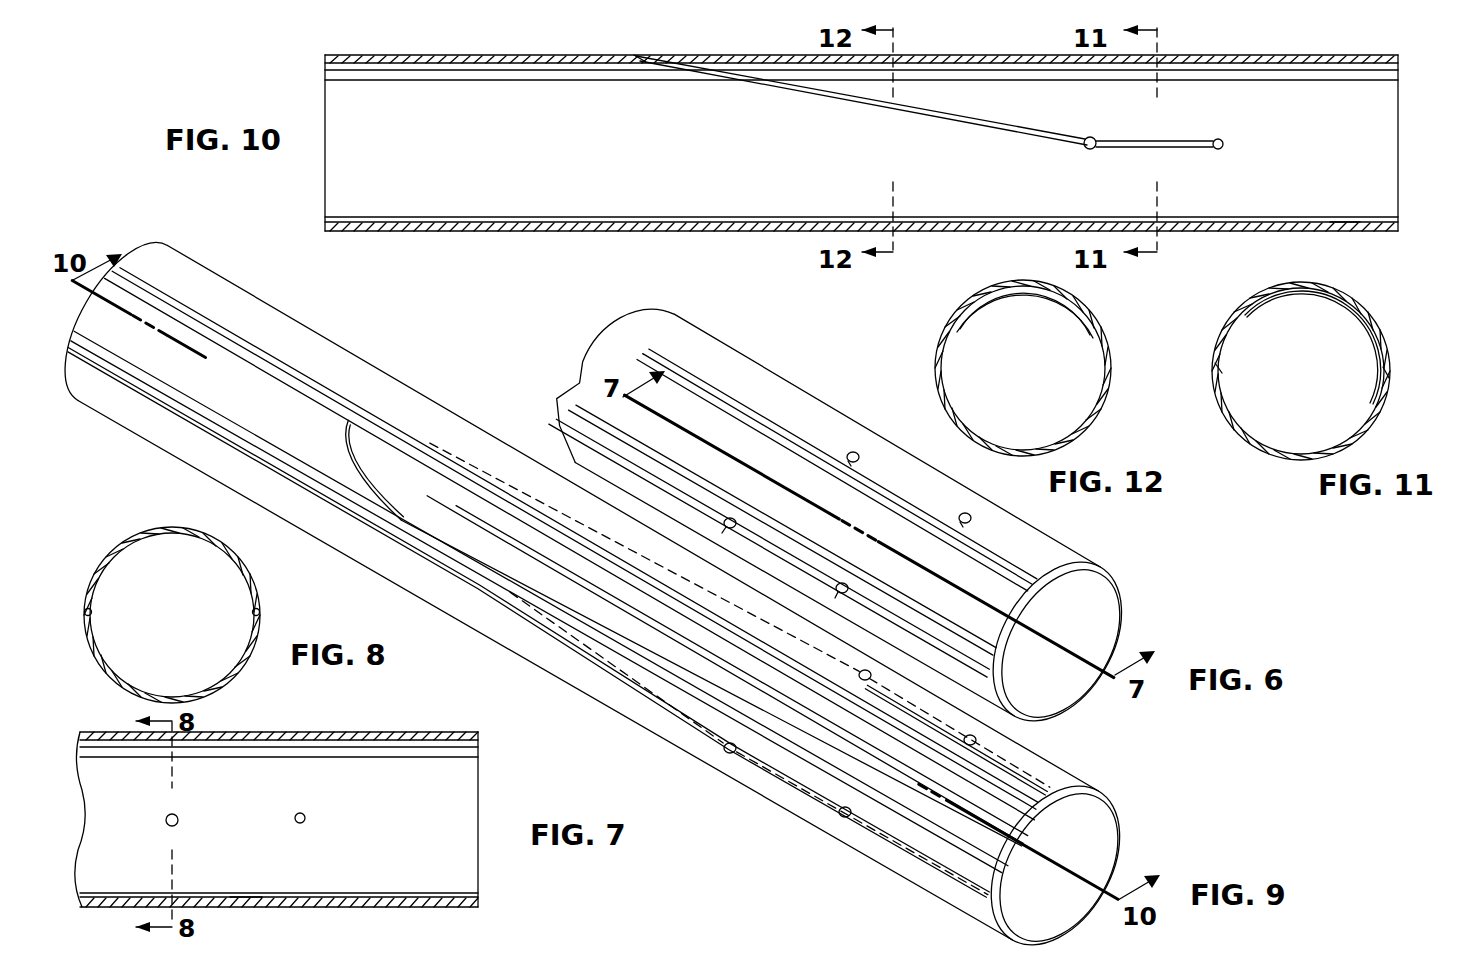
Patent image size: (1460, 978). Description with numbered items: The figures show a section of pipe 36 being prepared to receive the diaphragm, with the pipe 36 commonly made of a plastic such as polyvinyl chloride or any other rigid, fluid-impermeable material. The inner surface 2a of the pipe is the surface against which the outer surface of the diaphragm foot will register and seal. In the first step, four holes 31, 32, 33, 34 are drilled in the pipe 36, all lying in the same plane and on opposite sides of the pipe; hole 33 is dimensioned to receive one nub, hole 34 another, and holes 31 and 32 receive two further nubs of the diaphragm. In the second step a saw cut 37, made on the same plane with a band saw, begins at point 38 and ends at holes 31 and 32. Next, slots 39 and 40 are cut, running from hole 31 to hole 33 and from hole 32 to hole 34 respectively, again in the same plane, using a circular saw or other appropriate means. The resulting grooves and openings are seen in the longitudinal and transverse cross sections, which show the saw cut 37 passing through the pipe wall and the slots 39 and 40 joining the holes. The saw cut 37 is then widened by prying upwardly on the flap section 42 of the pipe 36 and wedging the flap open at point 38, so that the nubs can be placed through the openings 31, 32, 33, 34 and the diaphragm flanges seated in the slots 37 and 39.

In FIG. 10, the inner surface of fluid conduit 2a is at (1335, 222).
In FIG. 7, the inner surface of fluid conduit 2a is at (243, 897).
In FIG. 8, the hole 31 is at (94, 612).
In FIG. 6, the hole 31 is at (736, 518).
In FIG. 9, the hole 31 is at (727, 757).
In FIG. 10, the hole 32 is at (1088, 150).
In FIG. 8, the hole 32 is at (260, 612).
In FIG. 7, the hole 32 is at (178, 815).
In FIG. 6, the hole 32 is at (858, 450).
In FIG. 9, the hole 32 is at (852, 683).
In FIG. 6, the hole 33 is at (848, 583).
In FIG. 9, the hole 33 is at (843, 820).
In FIG. 10, the hole 34 is at (1224, 141).
In FIG. 7, the hole 34 is at (305, 815).
In FIG. 6, the hole 34 is at (976, 515).
In FIG. 9, the hole 34 is at (985, 742).
In FIG. 10, the pipe 36 is at (1400, 160).
In FIG. 12, the pipe 36 is at (1110, 396).
In FIG. 11, the pipe 36 is at (1386, 410).
In FIG. 8, the pipe 36 is at (232, 683).
In FIG. 7, the pipe 36 is at (394, 732).
In FIG. 6, the pipe 36 is at (1120, 590).
In FIG. 9, the pipe 36 is at (1116, 812).
In FIG. 10, the saw cut 37 is at (798, 90).
In FIG. 12, the saw cut 37 is at (962, 331).
In FIG. 11, the saw cut 37 is at (1250, 322).
In FIG. 9, the saw cut 37 is at (357, 482).
In FIG. 10, the point 38 is at (648, 57).
In FIG. 9, the point 38 is at (340, 430).
In FIG. 11, the slot 39 is at (1218, 368).
In FIG. 9, the slot 39 is at (782, 782).
In FIG. 10, the slot 40 is at (1165, 141).
In FIG. 11, the slot 40 is at (1384, 372).
In FIG. 9, the slot 40 is at (922, 715).
In FIG. 9, the flap section 42 is at (462, 521).